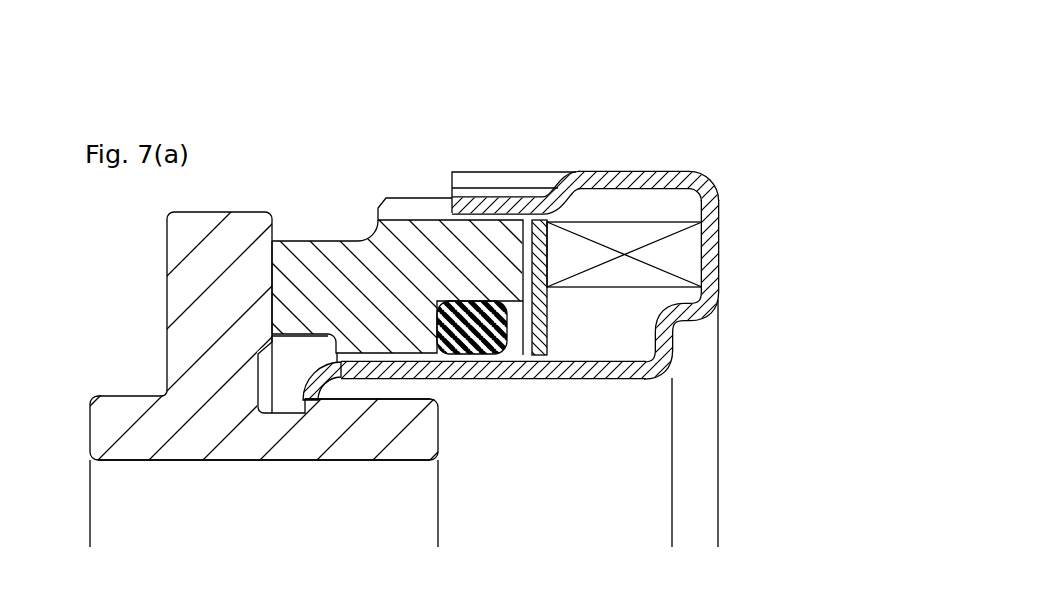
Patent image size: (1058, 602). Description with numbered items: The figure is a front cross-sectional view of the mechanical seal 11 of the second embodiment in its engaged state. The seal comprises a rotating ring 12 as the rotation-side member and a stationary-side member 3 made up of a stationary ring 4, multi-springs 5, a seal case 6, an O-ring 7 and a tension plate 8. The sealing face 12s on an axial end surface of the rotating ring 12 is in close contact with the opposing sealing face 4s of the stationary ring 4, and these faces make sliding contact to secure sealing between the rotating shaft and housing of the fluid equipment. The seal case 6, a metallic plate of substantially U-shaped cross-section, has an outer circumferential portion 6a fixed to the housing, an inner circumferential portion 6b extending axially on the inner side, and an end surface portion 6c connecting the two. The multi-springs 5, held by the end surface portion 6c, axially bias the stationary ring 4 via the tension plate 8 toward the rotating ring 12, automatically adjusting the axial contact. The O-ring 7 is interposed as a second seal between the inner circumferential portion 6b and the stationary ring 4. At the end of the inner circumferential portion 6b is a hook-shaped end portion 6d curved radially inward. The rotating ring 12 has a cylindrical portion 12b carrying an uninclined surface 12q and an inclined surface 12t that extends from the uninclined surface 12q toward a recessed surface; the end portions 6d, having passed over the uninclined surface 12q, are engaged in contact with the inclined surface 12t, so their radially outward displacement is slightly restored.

The mechanical seal 11 is at (701, 92).
The rotating ring 12 is at (128, 343).
The cylindrical portion 12b is at (192, 438).
The inclined surface 12t is at (300, 401).
The uninclined surface 12q is at (378, 381).
The sealing face 12s is at (274, 283).
The stationary-side member 3 is at (508, 155).
The stationary ring 4 is at (358, 256).
The sealing face 4s is at (288, 280).
The multi-spring 5 is at (618, 240).
The seal case 6 is at (786, 138).
The outer circumferential portion 6a is at (652, 172).
The inner circumferential portion 6b is at (584, 372).
The end surface portion 6c is at (718, 251).
The end portion 6d is at (326, 384).
The O-ring 7 is at (485, 335).
The tension plate 8 is at (542, 313).